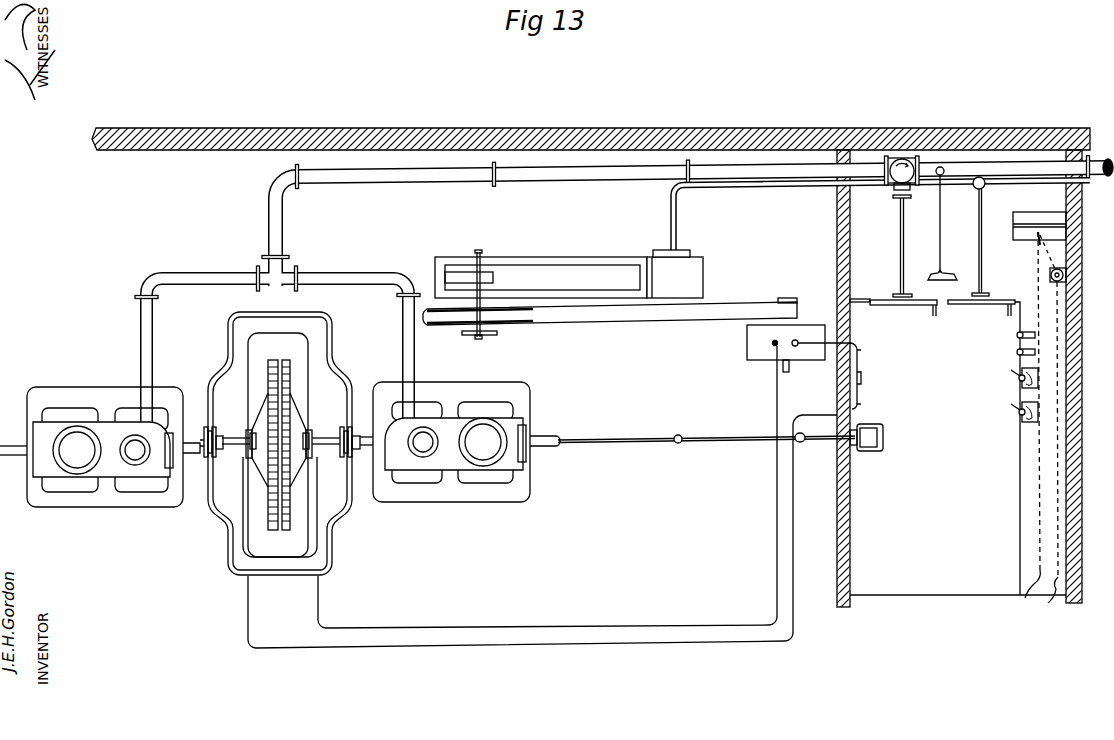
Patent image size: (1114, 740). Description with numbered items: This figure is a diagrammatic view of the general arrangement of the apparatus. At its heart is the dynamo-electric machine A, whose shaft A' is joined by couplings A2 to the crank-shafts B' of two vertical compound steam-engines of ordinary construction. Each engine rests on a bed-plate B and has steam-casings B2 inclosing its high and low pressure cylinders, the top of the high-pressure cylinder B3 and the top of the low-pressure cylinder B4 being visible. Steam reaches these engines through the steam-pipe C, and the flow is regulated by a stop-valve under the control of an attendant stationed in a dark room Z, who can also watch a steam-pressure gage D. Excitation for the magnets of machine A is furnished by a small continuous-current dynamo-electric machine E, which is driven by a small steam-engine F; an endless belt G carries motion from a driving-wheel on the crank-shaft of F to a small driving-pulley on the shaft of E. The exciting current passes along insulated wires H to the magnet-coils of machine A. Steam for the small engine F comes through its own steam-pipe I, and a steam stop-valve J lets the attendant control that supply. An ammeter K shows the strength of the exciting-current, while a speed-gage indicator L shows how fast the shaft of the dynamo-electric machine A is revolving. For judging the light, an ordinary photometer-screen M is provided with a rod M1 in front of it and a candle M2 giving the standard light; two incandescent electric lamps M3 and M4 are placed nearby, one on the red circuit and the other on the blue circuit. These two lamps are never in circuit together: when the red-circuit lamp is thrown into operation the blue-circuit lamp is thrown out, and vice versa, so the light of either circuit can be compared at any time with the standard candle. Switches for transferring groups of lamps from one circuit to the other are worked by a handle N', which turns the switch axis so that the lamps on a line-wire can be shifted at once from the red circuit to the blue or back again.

The dynamo-electric machine A is at (280, 443).
The shaft A' is at (280, 428).
The couplings A2 is at (360, 470).
The bed-plates B is at (265, 444).
The crank-shafts B' is at (427, 429).
The steam-casings B2 is at (103, 449).
The top of high-pressure cylinder B3 is at (279, 446).
The top of low-pressure cylinder B4 is at (280, 446).
The steam-pipe C is at (624, 290).
The steam-pressure gage D is at (943, 223).
The small continuous-current dynamo-electric machine E is at (786, 348).
The small steam-engine F is at (569, 294).
The endless belt G is at (680, 240).
The insulated wires H is at (831, 336).
The steam-pipe I is at (882, 218).
The steam stop-valve J is at (985, 188).
The ammeter K is at (866, 376).
The speed-gage indicator L is at (873, 437).
The photometer-screen M is at (1028, 413).
The rod M1 is at (1029, 238).
The candle M2 is at (1015, 349).
The incandescent electric lamp M3 is at (1053, 269).
The incandescent electric lamp M4 is at (1053, 448).
The handle N' is at (1009, 395).
The dark room Z is at (958, 509).